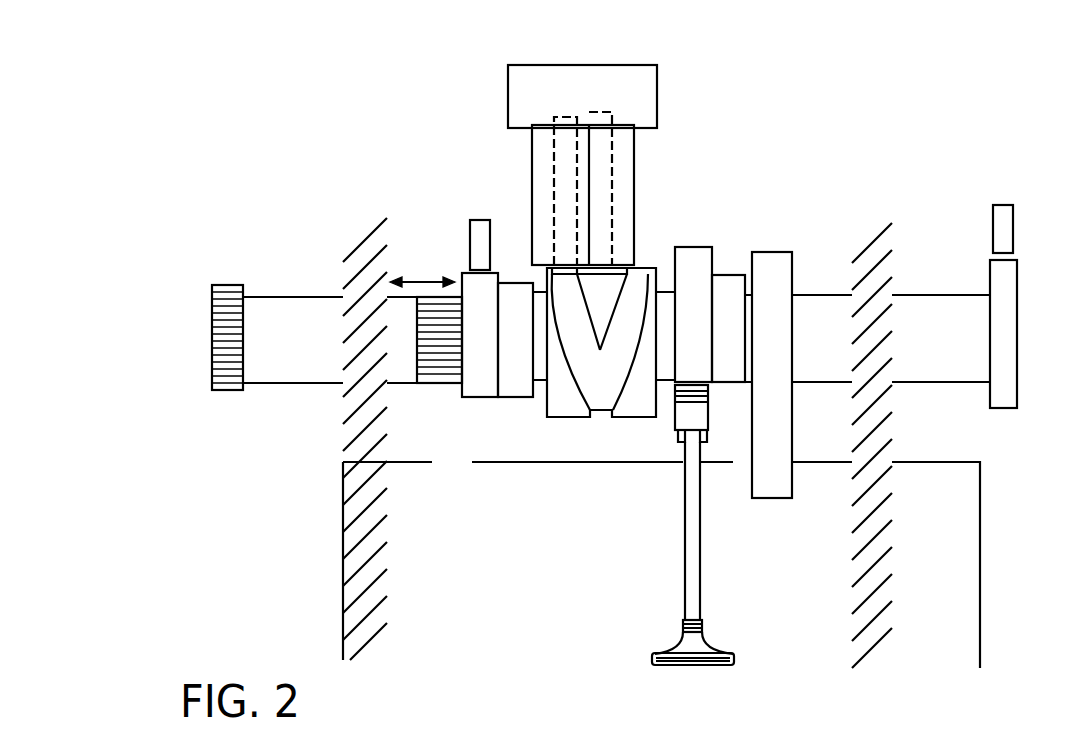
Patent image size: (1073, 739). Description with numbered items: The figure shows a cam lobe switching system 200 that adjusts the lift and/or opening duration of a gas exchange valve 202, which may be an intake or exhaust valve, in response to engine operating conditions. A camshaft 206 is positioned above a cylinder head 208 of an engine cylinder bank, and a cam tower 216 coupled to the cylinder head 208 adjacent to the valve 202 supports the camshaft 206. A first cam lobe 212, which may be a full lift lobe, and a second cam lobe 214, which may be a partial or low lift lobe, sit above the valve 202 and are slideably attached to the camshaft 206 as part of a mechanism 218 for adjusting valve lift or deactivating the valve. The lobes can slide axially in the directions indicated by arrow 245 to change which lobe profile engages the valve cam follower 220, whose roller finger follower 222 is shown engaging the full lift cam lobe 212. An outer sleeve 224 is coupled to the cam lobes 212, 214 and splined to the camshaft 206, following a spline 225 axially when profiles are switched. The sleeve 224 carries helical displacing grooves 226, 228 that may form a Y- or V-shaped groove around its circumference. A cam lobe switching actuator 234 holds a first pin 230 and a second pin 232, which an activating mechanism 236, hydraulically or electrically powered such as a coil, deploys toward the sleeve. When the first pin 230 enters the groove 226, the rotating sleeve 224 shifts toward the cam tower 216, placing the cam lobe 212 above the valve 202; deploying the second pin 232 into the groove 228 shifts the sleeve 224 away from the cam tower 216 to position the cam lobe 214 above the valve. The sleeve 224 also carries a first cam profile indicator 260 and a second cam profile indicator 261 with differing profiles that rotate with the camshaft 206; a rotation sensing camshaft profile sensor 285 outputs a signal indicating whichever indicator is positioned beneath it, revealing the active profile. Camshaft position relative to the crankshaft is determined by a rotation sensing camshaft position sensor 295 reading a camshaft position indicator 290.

The cam lobe switching system 200 is at (749, 130).
The gas exchange valve 202 is at (683, 490).
The camshaft 206 is at (293, 297).
The cylinder head 208 is at (971, 462).
The first cam lobe 212 is at (697, 247).
The second cam lobe 214 is at (721, 275).
The cam tower 216 is at (771, 273).
The mechanism 218 is at (518, 253).
The valve cam follower 220 is at (641, 436).
The roller finger follower 222 is at (696, 408).
The outer sleeve 224 is at (568, 405).
The spline 225 is at (456, 388).
The first displacing groove 226 is at (582, 318).
The second displacing groove 228 is at (630, 302).
The first actuator pin 230 is at (562, 173).
The second actuator pin 232 is at (600, 158).
The cam lobe switching actuator 234 is at (541, 135).
The activating mechanism 236 is at (568, 82).
The arrow 245 is at (431, 279).
The first cam profile indicator 260 is at (483, 397).
The second cam profile indicator 261 is at (523, 397).
The rotation sensing camshaft profile sensor 285 is at (482, 220).
The camshaft position indicator 290 is at (1018, 326).
The rotation sensing camshaft position sensor 295 is at (1004, 204).